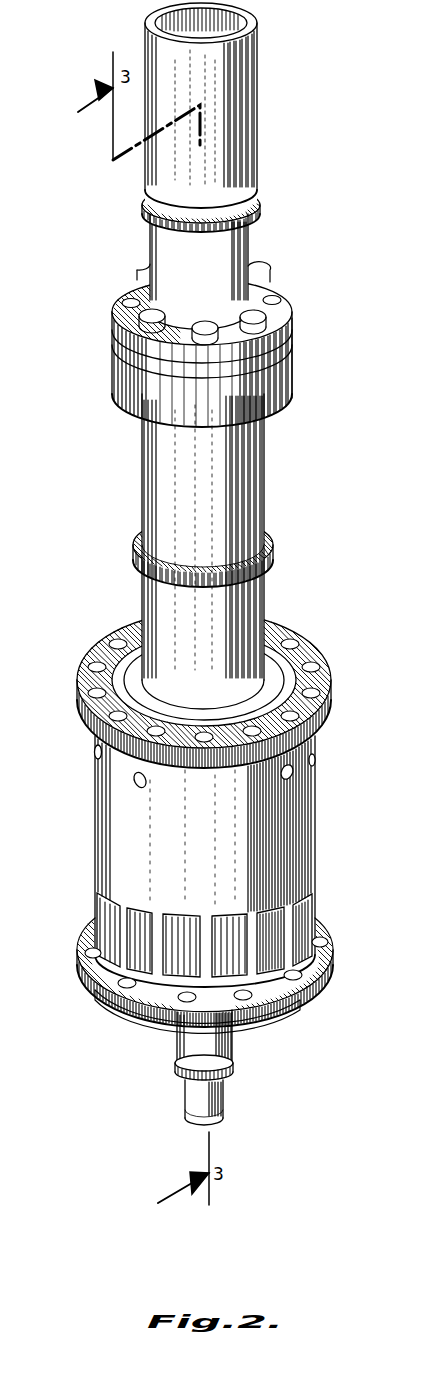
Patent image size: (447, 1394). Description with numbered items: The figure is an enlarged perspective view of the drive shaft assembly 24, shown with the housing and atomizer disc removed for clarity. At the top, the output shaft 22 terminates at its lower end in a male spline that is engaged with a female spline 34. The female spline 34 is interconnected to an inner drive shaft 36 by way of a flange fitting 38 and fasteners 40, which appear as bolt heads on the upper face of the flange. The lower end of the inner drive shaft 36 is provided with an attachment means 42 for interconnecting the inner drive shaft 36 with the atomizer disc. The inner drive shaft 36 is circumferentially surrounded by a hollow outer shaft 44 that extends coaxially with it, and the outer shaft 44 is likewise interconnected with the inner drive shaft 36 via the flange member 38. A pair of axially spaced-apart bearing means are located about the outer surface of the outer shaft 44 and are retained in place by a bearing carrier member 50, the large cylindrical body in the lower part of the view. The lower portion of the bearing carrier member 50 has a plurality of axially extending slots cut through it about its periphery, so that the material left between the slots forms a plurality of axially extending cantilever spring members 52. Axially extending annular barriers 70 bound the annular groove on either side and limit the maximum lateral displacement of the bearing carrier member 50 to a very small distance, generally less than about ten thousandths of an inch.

The output shaft 22 is at (258, 92).
The female spline 34 is at (259, 222).
The fasteners 40 is at (262, 300).
The flange fitting 38 is at (292, 385).
The hollow outer shaft 44 is at (265, 460).
The drive shaft assembly 24 is at (290, 568).
The bearing carrier member 50 is at (318, 790).
The annular barriers 70 is at (135, 780).
The cantilever spring members 52 is at (333, 935).
The inner drive shaft 36 is at (233, 1046).
The attachment means 42 is at (224, 1105).